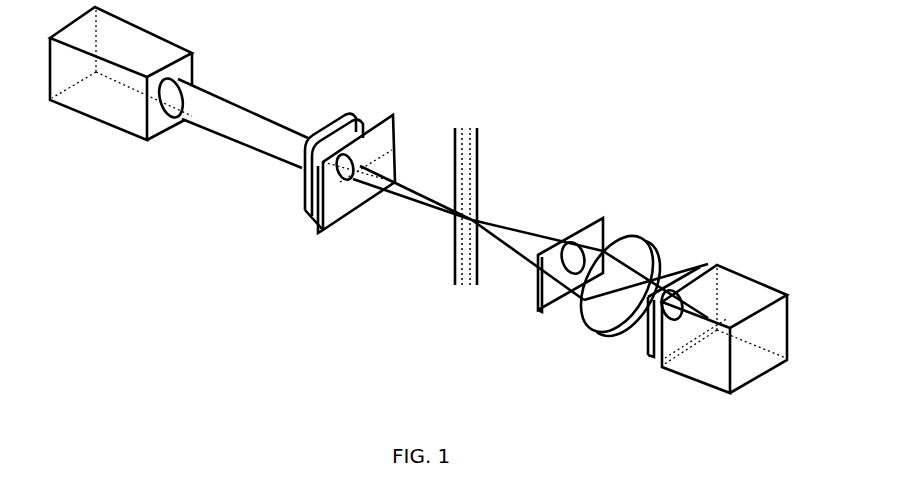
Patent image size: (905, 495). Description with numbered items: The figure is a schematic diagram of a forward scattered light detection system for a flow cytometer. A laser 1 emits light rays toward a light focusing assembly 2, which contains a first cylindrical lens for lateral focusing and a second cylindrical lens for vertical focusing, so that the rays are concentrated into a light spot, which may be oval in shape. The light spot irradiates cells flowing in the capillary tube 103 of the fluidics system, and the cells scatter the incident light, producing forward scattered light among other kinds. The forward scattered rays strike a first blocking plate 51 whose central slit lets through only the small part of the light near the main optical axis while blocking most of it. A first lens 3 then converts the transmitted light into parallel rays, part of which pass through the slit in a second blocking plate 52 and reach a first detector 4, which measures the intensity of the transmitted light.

The laser 1 is at (140, 50).
The light focusing assembly 2 is at (307, 218).
The capillary tube 103 is at (465, 168).
The first blocking plate 51 is at (548, 300).
The first lens 3 is at (632, 253).
The second blocking plate 52 is at (652, 353).
The first detector 4 is at (735, 295).